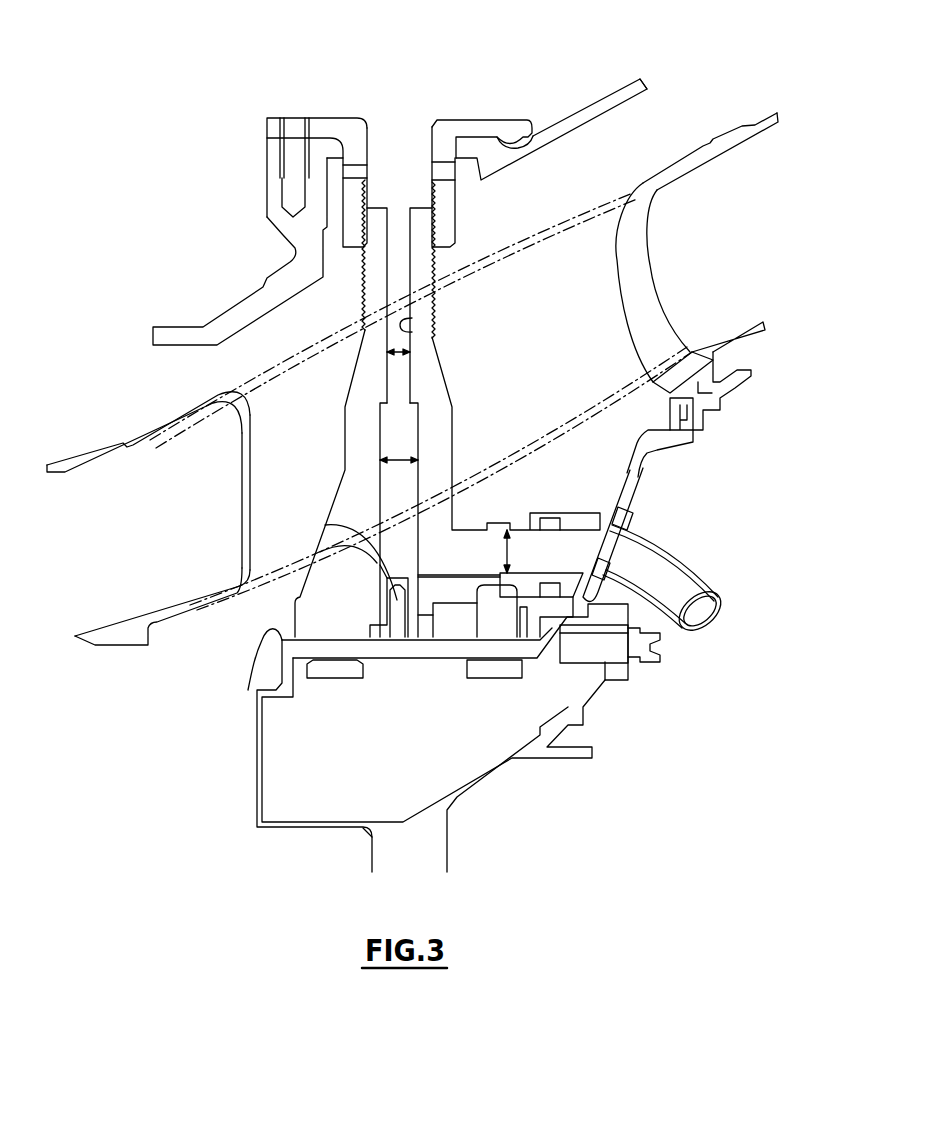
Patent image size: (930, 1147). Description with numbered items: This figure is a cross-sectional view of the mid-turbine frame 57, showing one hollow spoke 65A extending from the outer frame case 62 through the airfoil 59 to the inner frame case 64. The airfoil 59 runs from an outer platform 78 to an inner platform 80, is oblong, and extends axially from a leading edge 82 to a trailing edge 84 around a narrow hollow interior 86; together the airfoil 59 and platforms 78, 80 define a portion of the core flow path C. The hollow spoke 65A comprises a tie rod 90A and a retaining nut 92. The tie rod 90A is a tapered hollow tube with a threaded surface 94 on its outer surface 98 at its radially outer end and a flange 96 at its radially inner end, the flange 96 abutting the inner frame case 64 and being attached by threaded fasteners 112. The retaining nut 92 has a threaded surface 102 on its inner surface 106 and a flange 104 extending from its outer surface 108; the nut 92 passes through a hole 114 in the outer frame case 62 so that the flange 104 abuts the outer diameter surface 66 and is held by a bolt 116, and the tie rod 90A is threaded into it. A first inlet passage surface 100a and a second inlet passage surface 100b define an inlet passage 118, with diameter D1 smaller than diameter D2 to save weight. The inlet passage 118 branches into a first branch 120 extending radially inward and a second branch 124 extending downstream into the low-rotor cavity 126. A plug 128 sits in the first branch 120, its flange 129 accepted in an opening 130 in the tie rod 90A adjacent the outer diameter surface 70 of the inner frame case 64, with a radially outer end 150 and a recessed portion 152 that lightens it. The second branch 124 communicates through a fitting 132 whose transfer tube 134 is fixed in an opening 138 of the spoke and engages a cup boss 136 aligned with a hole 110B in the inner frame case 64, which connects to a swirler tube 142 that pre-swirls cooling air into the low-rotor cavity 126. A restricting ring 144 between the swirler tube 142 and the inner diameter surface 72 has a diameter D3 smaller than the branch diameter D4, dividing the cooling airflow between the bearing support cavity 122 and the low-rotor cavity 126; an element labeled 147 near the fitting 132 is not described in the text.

The mid-turbine frame 57 is at (160, 80).
The outer frame case 62 is at (628, 62).
The outer diameter surface 66 is at (598, 110).
The bolt 116 is at (300, 118).
The inner surface 106 is at (372, 99).
The hole 114 is at (455, 157).
The flange 104 is at (520, 118).
The threaded surface 102 is at (432, 205).
The outer surface 108 is at (327, 213).
The retaining nut 92 is at (468, 225).
The threaded surface 94 is at (366, 258).
The outer platform 78 is at (738, 137).
The airfoil 59 is at (662, 236).
The trailing edge 84 is at (660, 294).
The inner platform 80 is at (742, 322).
The tie rod 90A is at (445, 318).
The first inlet passage surface 100a is at (412, 328).
The second inlet passage surface 100b is at (375, 515).
The diameter D1 is at (398, 352).
The diameter D2 is at (375, 460).
The diameter D3 is at (603, 558).
The diameter D4 is at (505, 535).
The hollow spoke 65A is at (460, 392).
The outer surface 98 is at (366, 350).
The inlet passage 118 is at (394, 433).
The hollow interior 86 is at (252, 470).
The leading edge 82 is at (243, 495).
The second branch 124 is at (456, 535).
The fitting 132 is at (570, 462).
The bracket 147 is at (610, 430).
The transfer tube 134 is at (508, 515).
The cup boss 136 is at (598, 516).
The restricting ring 144 is at (622, 525).
The distal end 150 is at (345, 528).
The recessed portion 152 is at (335, 555).
The opening 138 is at (452, 535).
The flange 110B is at (585, 524).
The swirler tube 142 is at (662, 540).
The low-rotor cavity 126 is at (764, 555).
The core flow path C is at (92, 553).
The plug 128 is at (397, 600).
The flange 96 is at (275, 610).
The first branch 120 is at (368, 612).
The outer diameter surface 70 is at (270, 640).
The opening 130 is at (426, 625).
The threaded fasteners 112 is at (318, 672).
The flange 129 is at (418, 613).
The inner diameter surface 72 is at (530, 660).
The bearing support cavity 122 is at (408, 728).
The inner frame case 64 is at (548, 660).